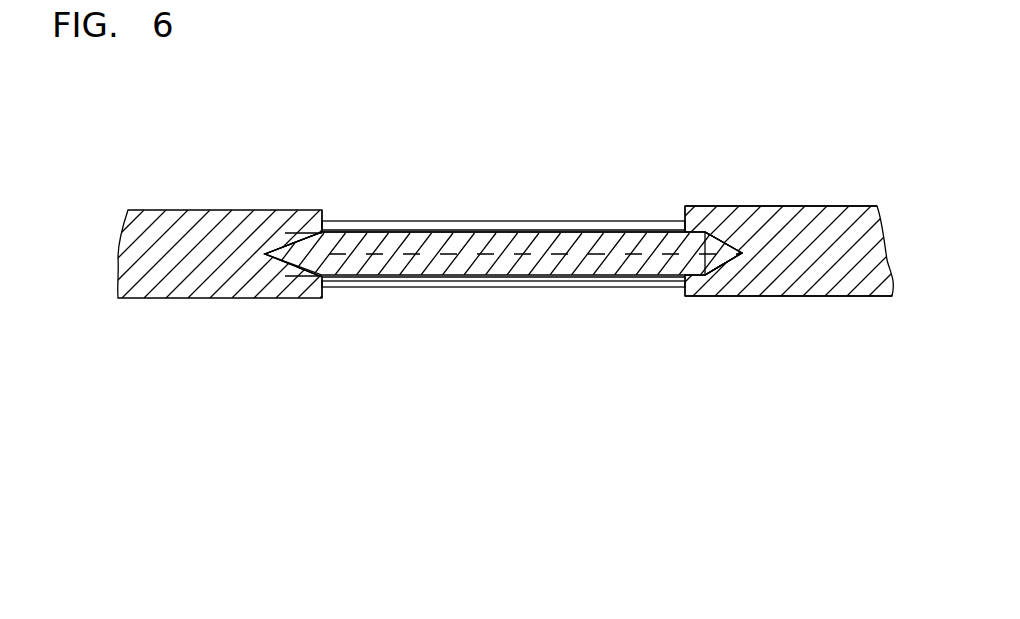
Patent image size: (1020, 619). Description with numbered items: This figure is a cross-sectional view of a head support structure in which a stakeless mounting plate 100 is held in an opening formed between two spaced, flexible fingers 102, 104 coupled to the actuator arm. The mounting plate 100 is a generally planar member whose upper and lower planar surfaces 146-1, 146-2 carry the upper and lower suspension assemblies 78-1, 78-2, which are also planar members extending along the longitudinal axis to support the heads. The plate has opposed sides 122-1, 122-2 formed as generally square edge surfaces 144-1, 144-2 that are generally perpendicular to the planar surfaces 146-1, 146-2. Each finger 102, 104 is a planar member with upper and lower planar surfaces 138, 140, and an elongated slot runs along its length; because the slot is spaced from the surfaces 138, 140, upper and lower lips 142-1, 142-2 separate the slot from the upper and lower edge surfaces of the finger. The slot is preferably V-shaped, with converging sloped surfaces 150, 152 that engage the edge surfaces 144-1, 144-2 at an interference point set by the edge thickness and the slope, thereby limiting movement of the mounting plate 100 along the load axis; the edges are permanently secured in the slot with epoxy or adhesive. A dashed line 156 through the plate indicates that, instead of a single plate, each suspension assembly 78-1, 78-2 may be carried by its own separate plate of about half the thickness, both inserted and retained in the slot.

The mounting plate 100 is at (539, 230).
The flexible finger 102 is at (783, 204).
The flexible finger 104 is at (179, 208).
The suspension assembly 78-1 is at (447, 219).
The suspension assembly 78-2 is at (440, 284).
The dashed line 156 is at (490, 250).
The upper planar surface of the mounting plate 146-1 is at (590, 231).
The lower planar surface of the mounting plate 146-2 is at (538, 278).
The upper lip 142-1 is at (323, 211).
The lower lip 142-2 is at (323, 294).
The square edge surface 144-1 is at (719, 276).
The square edge surface 144-2 is at (299, 230).
The side of the mounting plate 122-1 is at (708, 232).
The side of the mounting plate 122-2 is at (308, 256).
The converging sloped surface 150 is at (287, 243).
The converging sloped surface 152 is at (297, 267).
The upper planar surface of the finger 138 is at (818, 206).
The lower planar surface of the finger 140 is at (860, 297).